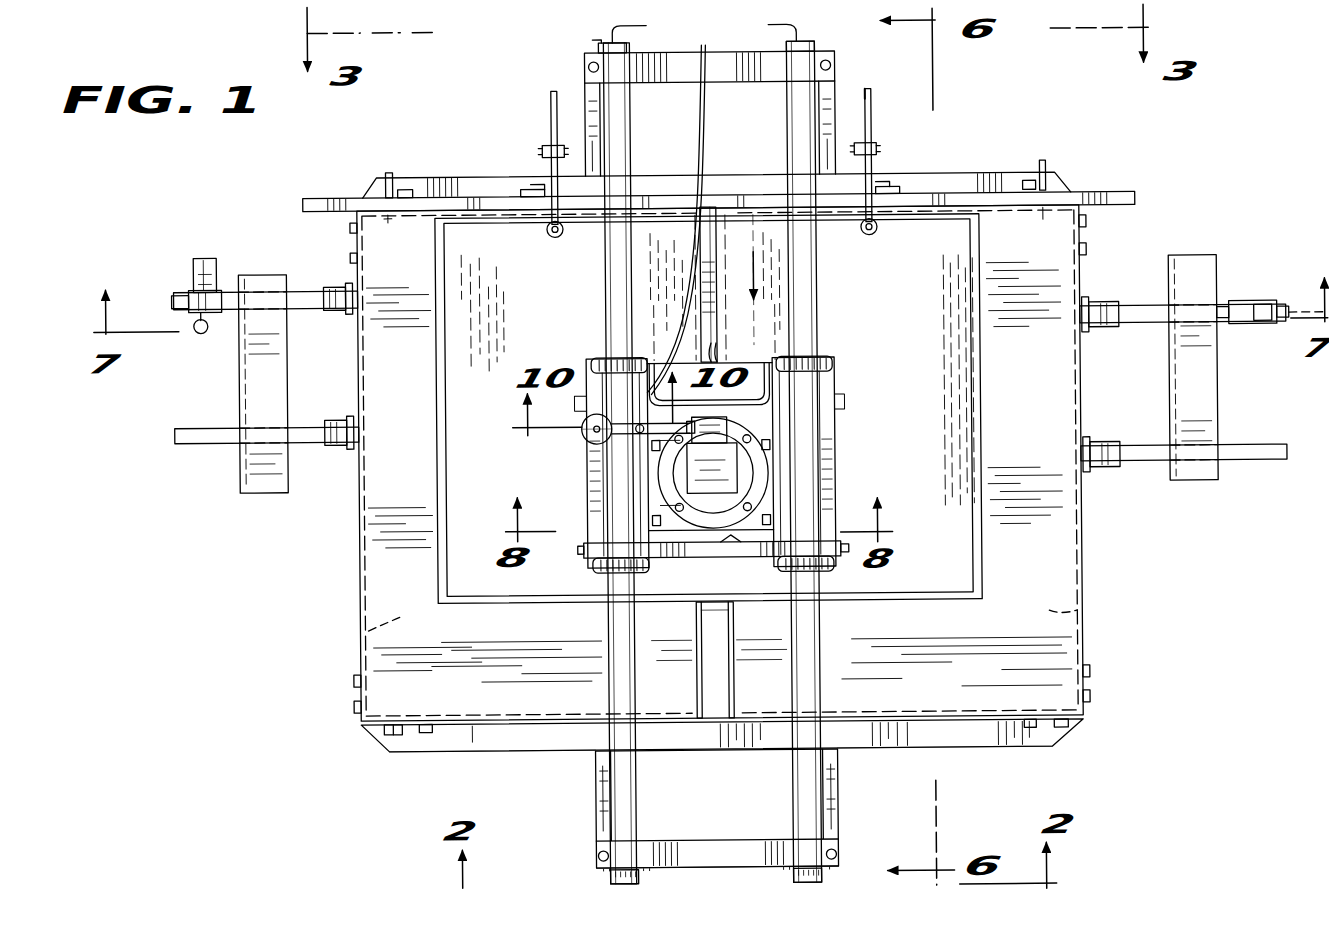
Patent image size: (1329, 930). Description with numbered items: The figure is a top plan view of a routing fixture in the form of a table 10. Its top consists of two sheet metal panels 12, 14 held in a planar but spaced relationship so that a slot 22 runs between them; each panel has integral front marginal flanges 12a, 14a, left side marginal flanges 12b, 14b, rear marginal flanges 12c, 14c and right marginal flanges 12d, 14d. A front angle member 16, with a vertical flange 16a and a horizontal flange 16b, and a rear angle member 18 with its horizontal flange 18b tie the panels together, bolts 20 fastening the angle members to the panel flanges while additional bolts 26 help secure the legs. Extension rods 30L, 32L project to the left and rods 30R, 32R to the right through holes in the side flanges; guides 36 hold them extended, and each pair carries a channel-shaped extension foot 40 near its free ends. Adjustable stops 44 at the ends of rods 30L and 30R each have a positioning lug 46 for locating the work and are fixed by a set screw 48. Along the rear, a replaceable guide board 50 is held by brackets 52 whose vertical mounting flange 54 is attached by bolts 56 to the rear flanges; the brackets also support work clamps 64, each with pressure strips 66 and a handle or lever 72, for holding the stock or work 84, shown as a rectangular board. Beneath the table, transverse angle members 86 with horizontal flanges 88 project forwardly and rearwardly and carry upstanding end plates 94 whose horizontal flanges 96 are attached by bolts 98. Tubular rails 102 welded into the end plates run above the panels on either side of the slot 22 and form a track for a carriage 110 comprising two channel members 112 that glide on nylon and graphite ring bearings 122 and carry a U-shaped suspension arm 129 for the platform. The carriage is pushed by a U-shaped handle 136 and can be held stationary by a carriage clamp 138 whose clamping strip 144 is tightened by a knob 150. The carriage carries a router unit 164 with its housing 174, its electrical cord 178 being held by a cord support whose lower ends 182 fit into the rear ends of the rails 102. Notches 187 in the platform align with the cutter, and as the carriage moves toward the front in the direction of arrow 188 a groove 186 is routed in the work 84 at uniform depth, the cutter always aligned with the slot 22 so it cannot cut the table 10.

The table 10 is at (354, 725).
The sheet metal panel 12 is at (410, 648).
The front marginal flange 12a is at (397, 235).
The left side marginal flange 12b is at (397, 612).
The rear marginal flange 12c is at (430, 710).
The right marginal flange 12d is at (695, 660).
The sheet metal panel 14 is at (1052, 650).
The front marginal flange 14a is at (1044, 231).
The left side marginal flange 14b is at (732, 706).
The rear marginal flange 14c is at (1022, 685).
The right marginal flange 14d is at (1048, 598).
The front angle member 16 is at (470, 754).
The vertical flange 16a is at (540, 735).
The horizontal flange 16b is at (935, 742).
The rear angle member 18 is at (1003, 166).
The horizontal flange 18b is at (420, 190).
The bolts 20 is at (390, 735).
The slot 22 is at (718, 708).
The additional bolts 26 is at (352, 255).
The extension rod 30L is at (316, 305).
The extension rod 30R is at (1148, 308).
The extension rod 32L is at (312, 440).
The extension rod 32R is at (1145, 466).
The guides 36 is at (333, 284).
The channel-shaped extension foot 40 is at (245, 466).
The adjustable stop 44 is at (186, 293).
The positioning lug 46 is at (1268, 328).
The set screw 48 is at (203, 330).
The replaceable guide board 50 is at (1137, 196).
The brackets 52 is at (508, 178).
The vertical mounting flange 54 is at (545, 210).
The bolts 56 is at (545, 170).
The work clamp 64 is at (549, 120).
The pressure strip 66 is at (565, 233).
The handle or lever 72 is at (871, 98).
The stock or work 84 is at (920, 578).
The transverse angle members 86 is at (205, 254).
The horizontal flange 88 is at (590, 90).
The end plates 94 is at (768, 62).
The horizontal flange 96 is at (682, 66).
The bolts 98 is at (592, 62).
The tubular rails 102 is at (606, 632).
The carriage 110 is at (850, 448).
The channel members 112 is at (840, 372).
The ring bearings 122 is at (810, 358).
The suspension arm 129 is at (782, 404).
The U-shaped handle 136 is at (775, 560).
The carriage clamp 138 is at (582, 432).
The clamping strip 144 is at (625, 435).
The knob 150 is at (584, 420).
The router unit 164 is at (702, 530).
The housing 174 is at (785, 490).
The electrical cord 178 is at (698, 158).
The lower ends 182 is at (600, 30).
The groove 186 is at (712, 242).
The notches 187 is at (720, 340).
The arrow 188 is at (760, 270).